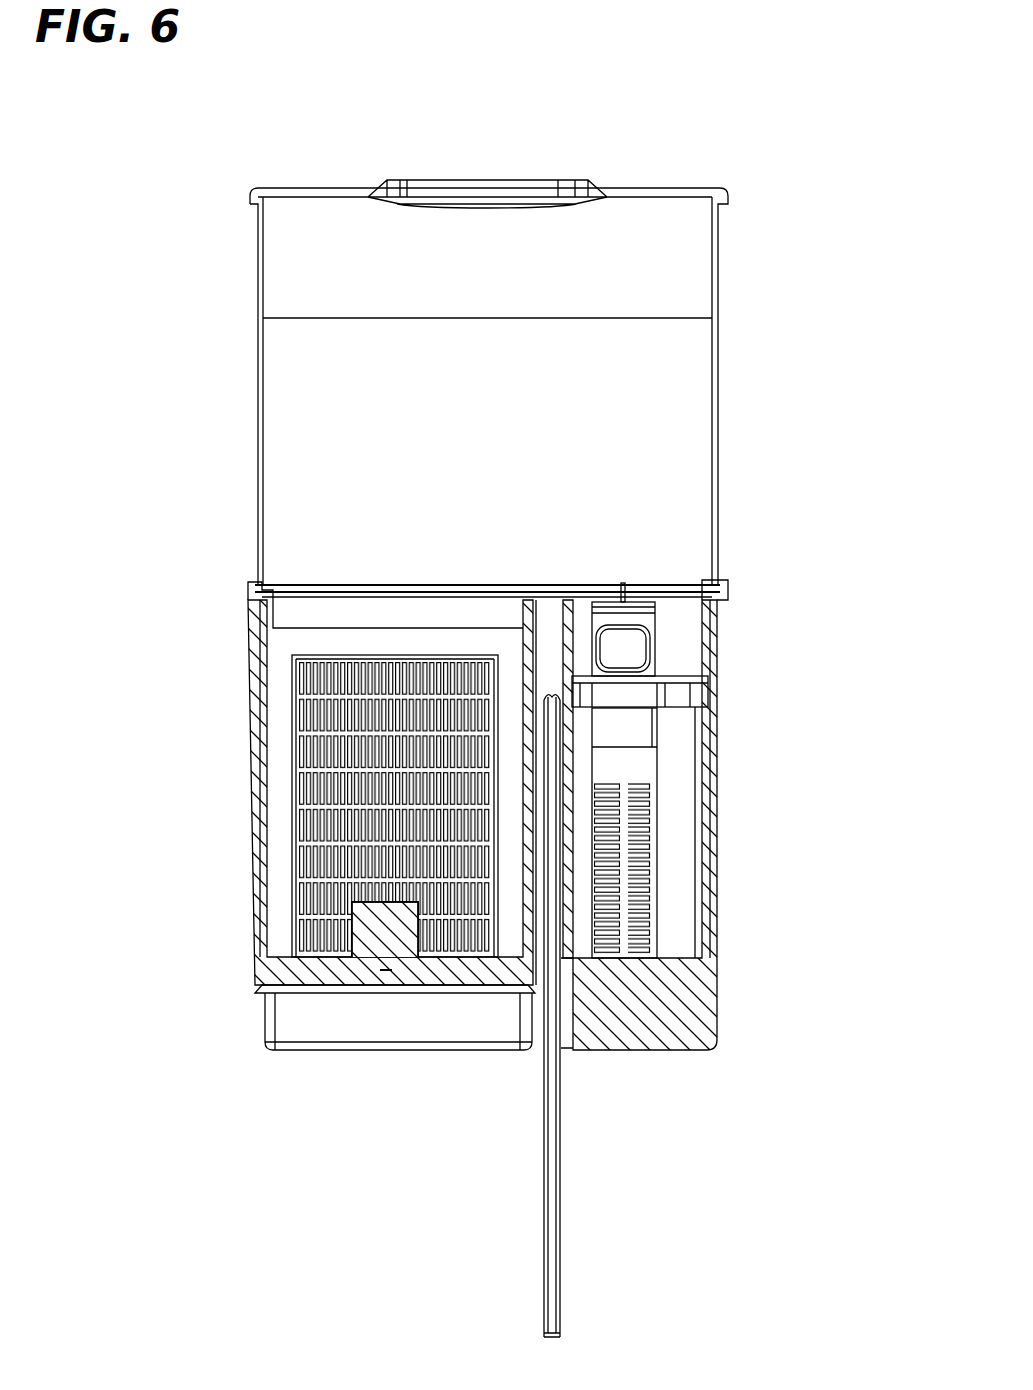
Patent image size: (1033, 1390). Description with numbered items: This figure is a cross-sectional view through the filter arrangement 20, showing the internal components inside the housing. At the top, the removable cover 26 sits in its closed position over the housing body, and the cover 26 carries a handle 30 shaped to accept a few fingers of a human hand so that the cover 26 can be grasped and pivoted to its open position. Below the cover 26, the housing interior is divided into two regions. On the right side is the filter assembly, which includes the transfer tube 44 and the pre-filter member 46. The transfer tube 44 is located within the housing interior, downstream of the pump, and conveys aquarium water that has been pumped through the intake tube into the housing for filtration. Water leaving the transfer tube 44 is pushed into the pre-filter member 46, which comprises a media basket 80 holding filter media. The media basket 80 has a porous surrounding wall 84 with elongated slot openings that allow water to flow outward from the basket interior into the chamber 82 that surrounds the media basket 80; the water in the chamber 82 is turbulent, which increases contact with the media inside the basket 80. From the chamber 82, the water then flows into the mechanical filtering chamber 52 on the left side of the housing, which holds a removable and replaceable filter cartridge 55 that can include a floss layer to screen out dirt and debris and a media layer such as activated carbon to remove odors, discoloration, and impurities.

The filter arrangement 20 is at (806, 260).
The removable cover 26 is at (500, 414).
The handle 30 is at (487, 198).
The transfer tube 44 is at (652, 650).
The pre-filter member 46 is at (690, 838).
The mechanical filtering chamber 52 is at (280, 646).
The filter cartridge 55 is at (315, 748).
The media basket 80 is at (645, 918).
The chamber 82 is at (700, 758).
The porous surrounding wall 84 is at (655, 893).